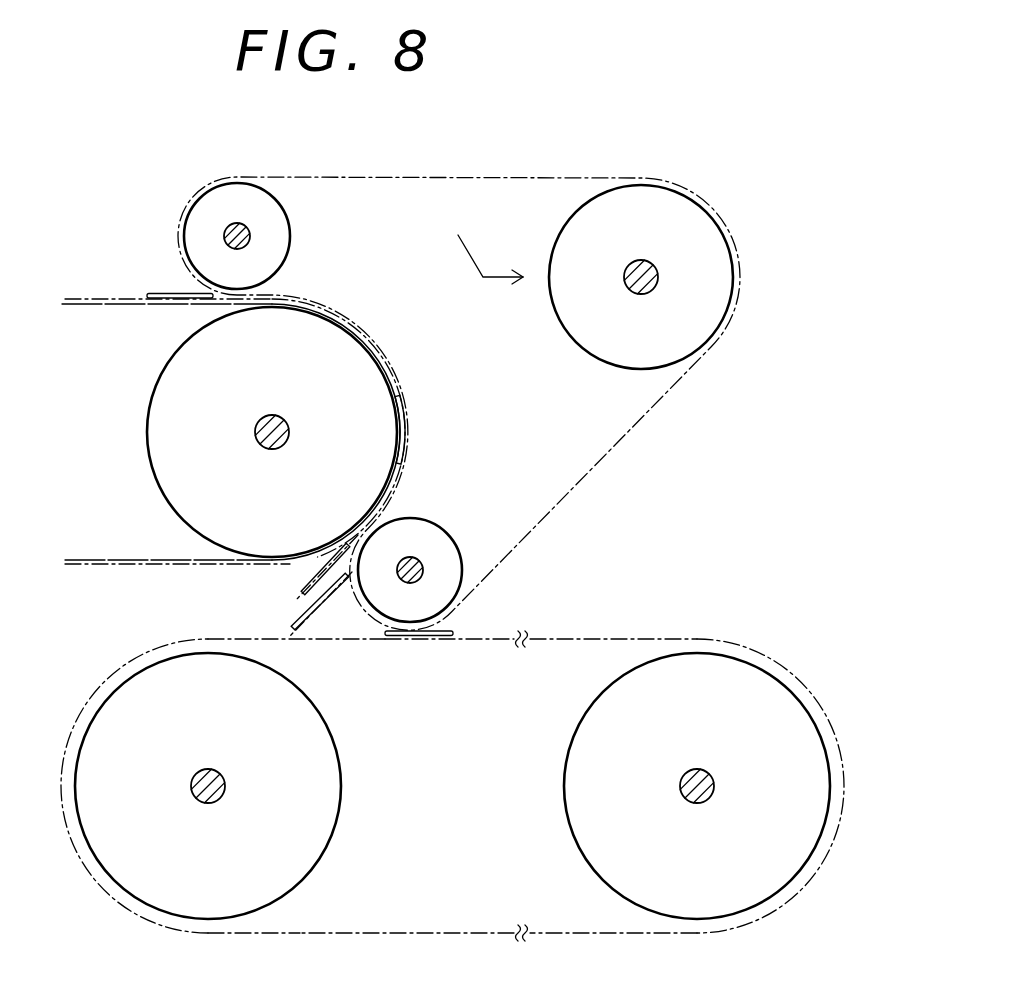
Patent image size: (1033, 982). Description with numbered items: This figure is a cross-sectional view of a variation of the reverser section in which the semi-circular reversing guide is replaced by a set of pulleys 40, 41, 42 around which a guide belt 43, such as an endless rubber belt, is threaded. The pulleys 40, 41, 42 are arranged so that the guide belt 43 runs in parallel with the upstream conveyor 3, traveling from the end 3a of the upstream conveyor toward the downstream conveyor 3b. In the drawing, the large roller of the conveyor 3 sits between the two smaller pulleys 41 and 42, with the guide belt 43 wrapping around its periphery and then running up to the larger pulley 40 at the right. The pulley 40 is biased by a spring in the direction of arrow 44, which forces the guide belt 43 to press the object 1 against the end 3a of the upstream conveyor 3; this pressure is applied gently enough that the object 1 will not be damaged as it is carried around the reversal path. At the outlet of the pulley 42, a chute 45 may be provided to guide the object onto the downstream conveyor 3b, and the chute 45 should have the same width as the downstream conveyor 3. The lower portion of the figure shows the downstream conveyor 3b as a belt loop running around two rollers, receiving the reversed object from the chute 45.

The object 1 is at (408, 433).
The conveyor 3 is at (90, 298).
The end of the upstream conveyor 3a is at (142, 563).
The downstream conveyor 3b is at (212, 638).
The pulley 40 is at (678, 215).
The pulley 41 is at (258, 202).
The pulley 42 is at (453, 568).
The guide belt 43 is at (380, 176).
The arrow 44 is at (468, 243).
The chute 45 is at (298, 623).